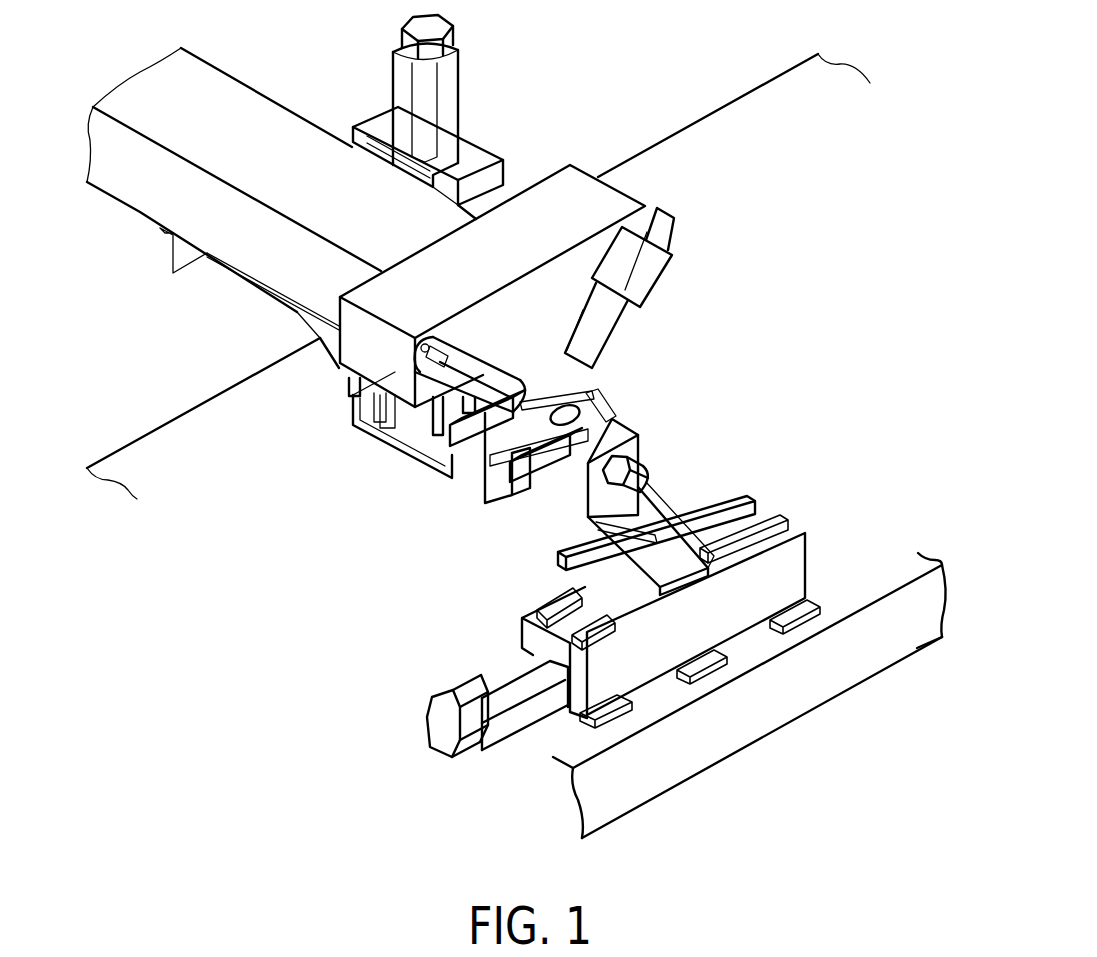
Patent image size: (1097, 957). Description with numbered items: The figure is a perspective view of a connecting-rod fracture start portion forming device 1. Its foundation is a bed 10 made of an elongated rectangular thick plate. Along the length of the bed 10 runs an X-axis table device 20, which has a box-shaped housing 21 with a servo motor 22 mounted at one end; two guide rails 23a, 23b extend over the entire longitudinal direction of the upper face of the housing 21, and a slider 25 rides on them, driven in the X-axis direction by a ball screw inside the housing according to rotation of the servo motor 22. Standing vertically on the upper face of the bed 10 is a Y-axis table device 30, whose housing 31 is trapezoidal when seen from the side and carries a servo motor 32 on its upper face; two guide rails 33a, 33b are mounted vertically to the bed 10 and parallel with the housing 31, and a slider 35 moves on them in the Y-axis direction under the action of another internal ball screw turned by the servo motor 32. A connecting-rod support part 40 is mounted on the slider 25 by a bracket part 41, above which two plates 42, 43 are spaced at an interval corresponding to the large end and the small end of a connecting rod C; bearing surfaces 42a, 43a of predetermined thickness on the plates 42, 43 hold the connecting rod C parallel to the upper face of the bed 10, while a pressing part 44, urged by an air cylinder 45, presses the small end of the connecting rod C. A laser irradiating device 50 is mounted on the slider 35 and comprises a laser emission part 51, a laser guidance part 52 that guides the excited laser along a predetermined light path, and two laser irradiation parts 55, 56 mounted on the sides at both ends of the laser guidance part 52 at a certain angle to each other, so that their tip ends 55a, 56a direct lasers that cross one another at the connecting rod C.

The connecting-rod fracture start portion forming device 1 is at (720, 278).
The bed 10 is at (335, 560).
The X-axis table device 20 is at (655, 585).
The housing 21 is at (807, 573).
The servo motor 22 is at (498, 740).
The guide rail 23a is at (540, 600).
The guide rail 23b is at (522, 648).
The slider 25 is at (563, 558).
The Y-axis table device 30 is at (464, 110).
The housing 31 is at (512, 160).
The servo motor 32 is at (458, 73).
The guide rail 33a is at (348, 383).
The guide rail 33b is at (470, 458).
The slider 35 is at (410, 416).
The connecting-rod support part 40 is at (687, 473).
The bracket part 41 is at (690, 520).
The plate 42 is at (441, 476).
The bearing surface 42a is at (440, 455).
The plate 43 is at (633, 427).
The bearing surface 43a is at (527, 498).
The pressing part 44 is at (637, 416).
The air cylinder 45 is at (662, 455).
The laser irradiating device 50 is at (632, 182).
The laser emission part 51 is at (235, 95).
The laser guidance part 52 is at (595, 173).
The laser irradiation part 55 is at (515, 314).
The tip end 55a is at (548, 395).
The laser irradiation part 56 is at (661, 285).
The tip end 56a is at (593, 380).
The connecting rod C is at (600, 407).